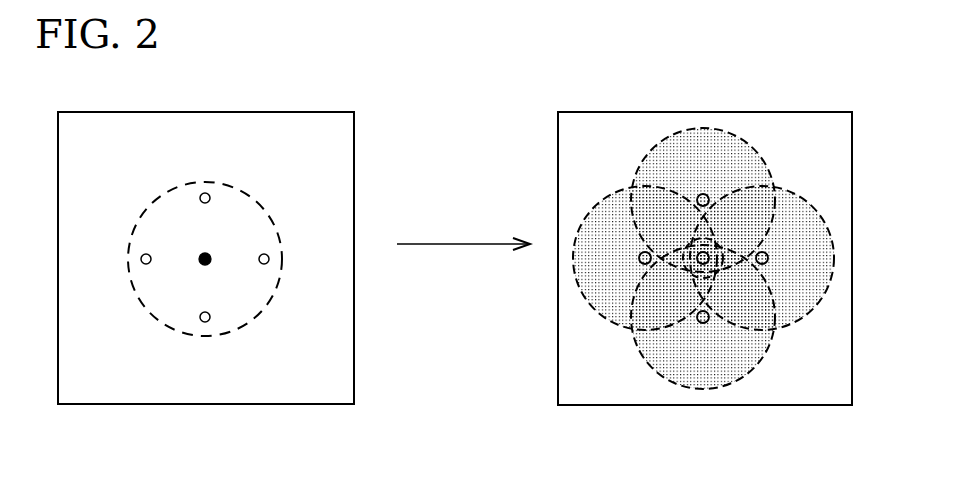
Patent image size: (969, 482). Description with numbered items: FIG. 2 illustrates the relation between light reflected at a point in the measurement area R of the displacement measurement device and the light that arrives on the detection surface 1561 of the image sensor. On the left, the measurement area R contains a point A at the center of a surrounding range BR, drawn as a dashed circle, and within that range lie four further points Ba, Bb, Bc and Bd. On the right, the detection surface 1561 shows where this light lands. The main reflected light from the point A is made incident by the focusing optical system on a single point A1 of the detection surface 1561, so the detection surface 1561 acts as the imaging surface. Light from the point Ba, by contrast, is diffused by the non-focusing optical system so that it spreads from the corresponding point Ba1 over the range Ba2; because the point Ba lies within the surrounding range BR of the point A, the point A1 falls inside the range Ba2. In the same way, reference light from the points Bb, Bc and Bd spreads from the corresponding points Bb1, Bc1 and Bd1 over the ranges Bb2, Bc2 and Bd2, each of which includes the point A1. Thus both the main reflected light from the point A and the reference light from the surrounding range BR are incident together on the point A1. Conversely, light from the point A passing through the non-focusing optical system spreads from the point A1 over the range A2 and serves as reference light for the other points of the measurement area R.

The measurement area R is at (311, 360).
The surrounding range BR is at (250, 199).
The point A is at (214, 249).
The point Ba is at (268, 257).
The point Bb is at (203, 193).
The point Bc is at (143, 262).
The point Bd is at (208, 321).
The detection surface 1561 is at (842, 365).
The point A1 is at (706, 253).
The range A2 is at (768, 220).
The point Ba1 is at (768, 255).
The range Ba2 is at (832, 240).
The point Bb1 is at (700, 196).
The range Bb2 is at (693, 126).
The point Bc1 is at (641, 263).
The range Bc2 is at (582, 295).
The point Bd1 is at (708, 321).
The range Bd2 is at (722, 392).